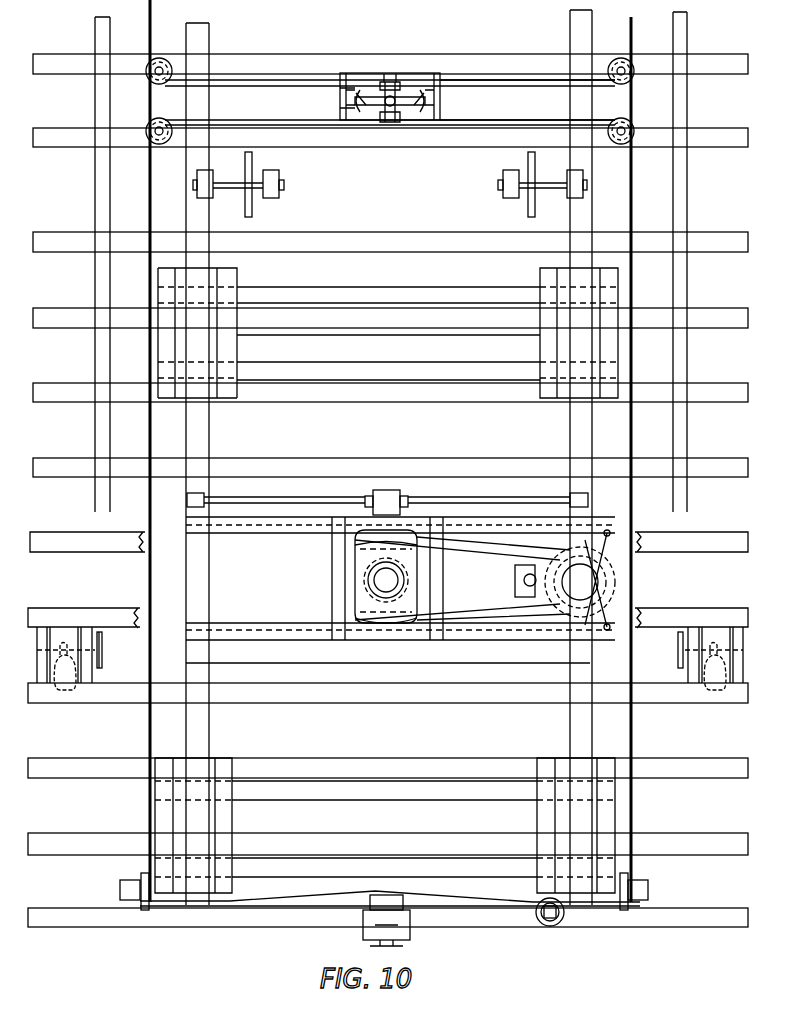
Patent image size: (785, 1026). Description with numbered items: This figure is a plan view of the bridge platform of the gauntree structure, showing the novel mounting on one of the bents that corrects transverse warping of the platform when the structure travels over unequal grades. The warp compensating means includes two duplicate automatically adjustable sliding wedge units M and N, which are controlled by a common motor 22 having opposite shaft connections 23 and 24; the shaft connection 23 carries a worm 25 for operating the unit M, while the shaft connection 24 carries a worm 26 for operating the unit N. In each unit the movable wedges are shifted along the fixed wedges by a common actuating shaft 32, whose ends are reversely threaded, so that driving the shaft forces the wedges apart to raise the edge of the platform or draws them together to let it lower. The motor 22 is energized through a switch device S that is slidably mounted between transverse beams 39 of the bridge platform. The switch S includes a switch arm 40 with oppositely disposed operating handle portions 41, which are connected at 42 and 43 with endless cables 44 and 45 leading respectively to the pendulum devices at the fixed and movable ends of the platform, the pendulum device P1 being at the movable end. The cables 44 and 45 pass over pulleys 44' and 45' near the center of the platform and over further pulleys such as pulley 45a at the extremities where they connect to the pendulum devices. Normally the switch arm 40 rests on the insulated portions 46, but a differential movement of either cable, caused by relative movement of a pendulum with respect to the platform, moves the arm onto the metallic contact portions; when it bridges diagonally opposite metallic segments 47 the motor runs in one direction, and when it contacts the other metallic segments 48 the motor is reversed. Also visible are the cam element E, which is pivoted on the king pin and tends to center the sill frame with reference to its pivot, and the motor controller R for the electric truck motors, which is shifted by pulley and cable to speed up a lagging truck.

The motor 22 is at (388, 490).
The shaft connection 23 is at (485, 497).
The shaft connection 24 is at (290, 497).
The worm 25 is at (588, 500).
The worm 26 is at (190, 508).
The actuating shaft 32 is at (200, 724).
The transverse beams 39 is at (527, 103).
The switch arm 40 is at (400, 100).
The operating handle portions 41 is at (383, 84).
The cable connection 42 is at (395, 68).
The cable connection 43 is at (390, 124).
The endless cable 44 is at (389, 75).
The pulley 44' is at (378, 86).
The endless cable 45 is at (391, 452).
The pulley 45' is at (390, 157).
The pulley 45a is at (122, 888).
The insulated portions 46 is at (345, 95).
The metallic segments 47 is at (438, 88).
The metallic segments 48 is at (358, 97).
The switch device S is at (455, 100).
The sliding wedge unit N is at (207, 580).
The sliding wedge unit M is at (566, 580).
The cam element E is at (410, 587).
The motor controller R is at (522, 580).
The pendulum device P1 is at (405, 935).